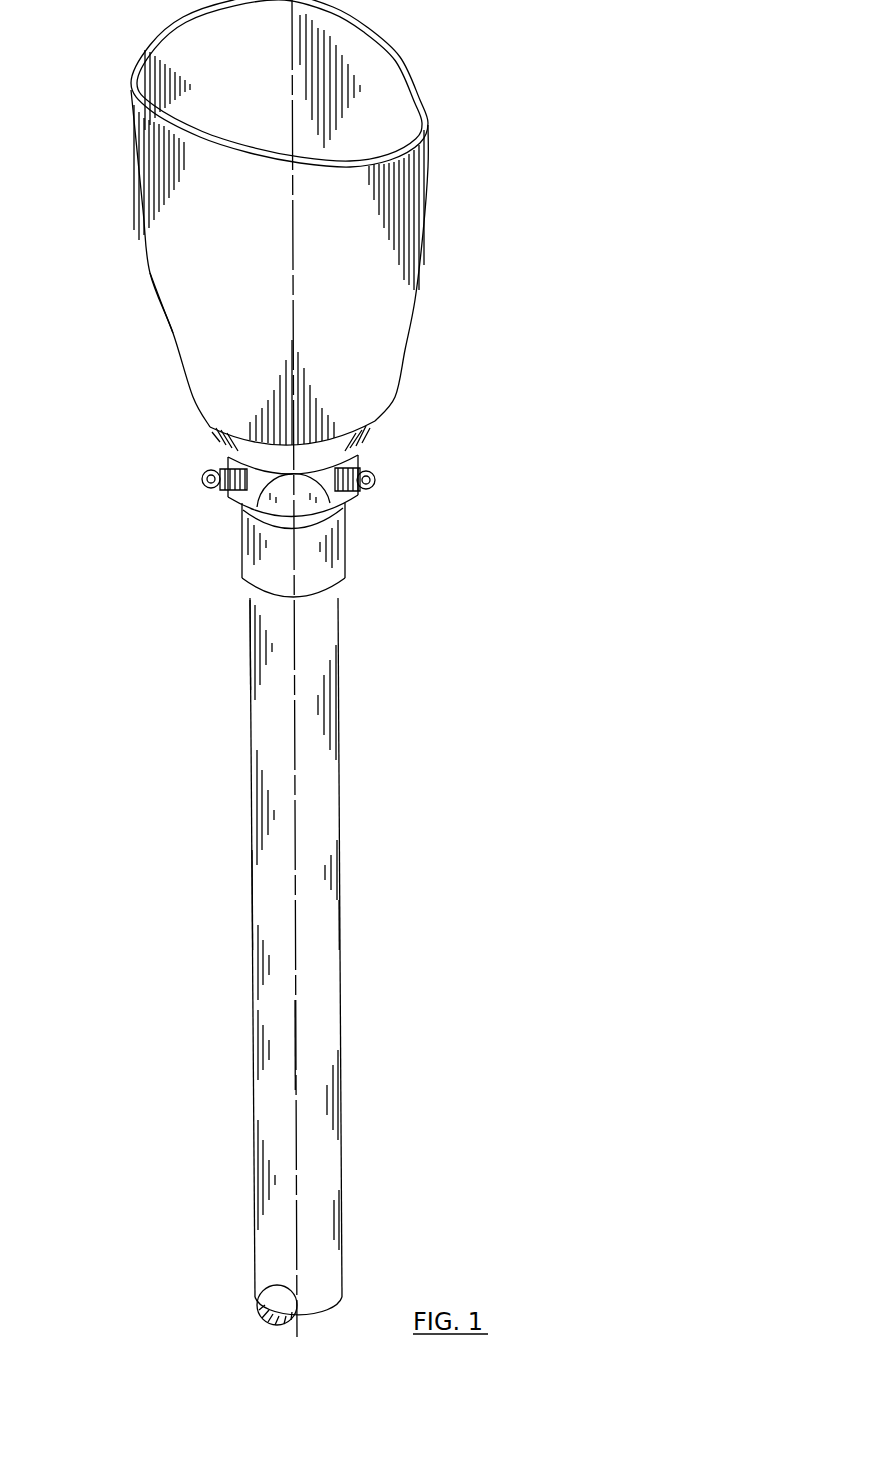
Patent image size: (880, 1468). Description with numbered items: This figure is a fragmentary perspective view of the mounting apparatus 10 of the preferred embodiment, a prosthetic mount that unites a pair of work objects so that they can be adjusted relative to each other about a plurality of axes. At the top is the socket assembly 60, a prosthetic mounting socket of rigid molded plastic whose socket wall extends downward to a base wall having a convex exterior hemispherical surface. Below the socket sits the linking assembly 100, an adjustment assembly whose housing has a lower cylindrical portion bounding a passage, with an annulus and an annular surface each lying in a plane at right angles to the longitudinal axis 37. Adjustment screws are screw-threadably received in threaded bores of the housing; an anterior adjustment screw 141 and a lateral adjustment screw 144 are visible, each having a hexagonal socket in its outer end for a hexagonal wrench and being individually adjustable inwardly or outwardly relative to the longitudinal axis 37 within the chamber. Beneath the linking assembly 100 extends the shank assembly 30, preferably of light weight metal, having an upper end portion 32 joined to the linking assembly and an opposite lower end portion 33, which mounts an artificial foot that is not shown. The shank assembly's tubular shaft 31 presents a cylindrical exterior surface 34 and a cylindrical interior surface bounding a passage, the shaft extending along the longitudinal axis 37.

The mounting apparatus 10 is at (436, 217).
The socket assembly 60 is at (152, 275).
The linking assembly 100 is at (400, 441).
The anterior adjustment screw 141 is at (375, 478).
The lateral adjustment screw 144 is at (202, 478).
The shank assembly 30 is at (347, 834).
The tubular shaft 31 is at (252, 880).
The upper end portion 32 is at (250, 640).
The lower end portion 33 is at (256, 1282).
The cylindrical exterior surface 34 is at (329, 943).
The longitudinal axis 37 is at (296, 1045).